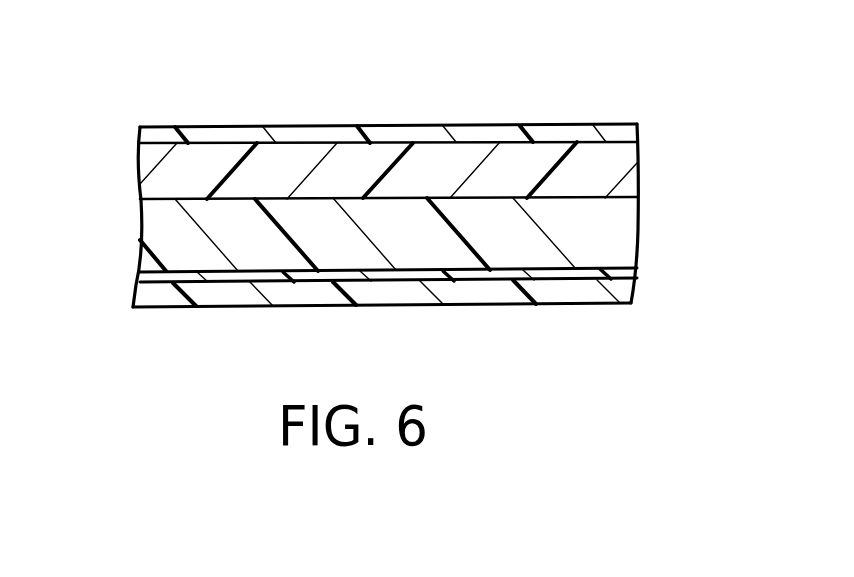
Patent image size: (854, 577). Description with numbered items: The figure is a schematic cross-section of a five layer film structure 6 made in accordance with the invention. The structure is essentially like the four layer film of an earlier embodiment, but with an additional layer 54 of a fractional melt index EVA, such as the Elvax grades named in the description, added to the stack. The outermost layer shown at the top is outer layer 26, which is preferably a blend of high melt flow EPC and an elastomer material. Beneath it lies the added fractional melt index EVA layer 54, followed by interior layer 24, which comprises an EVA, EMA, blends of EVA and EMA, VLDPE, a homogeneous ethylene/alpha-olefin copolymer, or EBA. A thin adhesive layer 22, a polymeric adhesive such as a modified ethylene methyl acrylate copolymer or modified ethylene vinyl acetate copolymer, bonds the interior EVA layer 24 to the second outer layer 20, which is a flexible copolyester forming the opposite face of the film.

The five layer film structure 6 is at (650, 86).
The second outer layer 20 is at (633, 290).
The adhesive layer 22 is at (136, 278).
The interior layer 24 is at (638, 232).
The outer layer 26 is at (140, 132).
The layer of fractional melt index EVA 54 is at (143, 178).